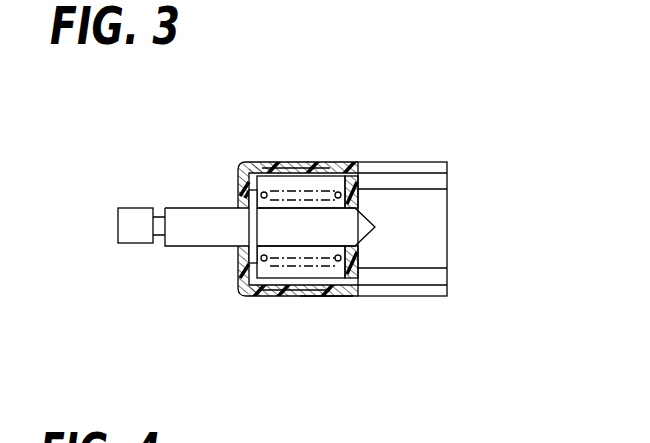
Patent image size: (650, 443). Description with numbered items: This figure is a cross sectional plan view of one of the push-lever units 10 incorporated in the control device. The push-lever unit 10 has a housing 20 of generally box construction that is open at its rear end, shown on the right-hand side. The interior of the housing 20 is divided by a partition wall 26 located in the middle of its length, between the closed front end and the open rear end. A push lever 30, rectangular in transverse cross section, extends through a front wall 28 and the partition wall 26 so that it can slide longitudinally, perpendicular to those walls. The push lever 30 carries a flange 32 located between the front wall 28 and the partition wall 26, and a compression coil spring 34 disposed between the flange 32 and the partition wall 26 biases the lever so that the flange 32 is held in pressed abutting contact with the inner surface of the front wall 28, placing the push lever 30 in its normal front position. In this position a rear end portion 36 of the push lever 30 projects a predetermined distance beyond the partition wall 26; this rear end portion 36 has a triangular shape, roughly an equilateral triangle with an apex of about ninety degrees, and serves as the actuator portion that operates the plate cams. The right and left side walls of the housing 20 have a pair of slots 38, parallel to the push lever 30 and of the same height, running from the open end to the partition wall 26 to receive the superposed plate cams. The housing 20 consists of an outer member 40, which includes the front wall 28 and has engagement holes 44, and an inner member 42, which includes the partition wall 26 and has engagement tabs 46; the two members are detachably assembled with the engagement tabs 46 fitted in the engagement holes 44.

The push-lever unit 10 is at (185, 150).
The housing 20 is at (313, 143).
The partition wall 26 is at (355, 275).
The front wall 28 is at (240, 268).
The push lever 30 is at (137, 238).
The flange 32 is at (254, 197).
The compression coil spring 34 is at (243, 172).
The rear end portion 36 is at (373, 231).
The slots 38 is at (445, 168).
The outer member 40 is at (330, 300).
The inner member 42 is at (365, 198).
The engagement holes 44 is at (268, 166).
The engagement tabs 46 is at (280, 168).